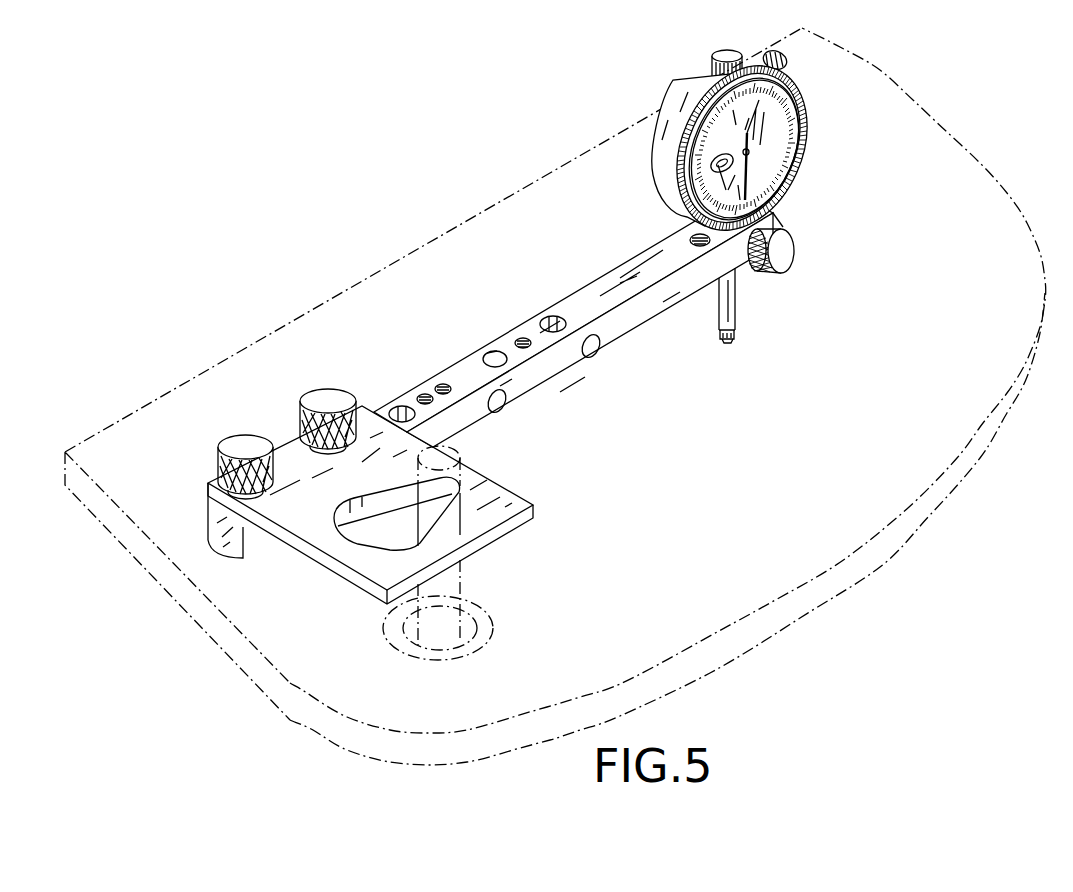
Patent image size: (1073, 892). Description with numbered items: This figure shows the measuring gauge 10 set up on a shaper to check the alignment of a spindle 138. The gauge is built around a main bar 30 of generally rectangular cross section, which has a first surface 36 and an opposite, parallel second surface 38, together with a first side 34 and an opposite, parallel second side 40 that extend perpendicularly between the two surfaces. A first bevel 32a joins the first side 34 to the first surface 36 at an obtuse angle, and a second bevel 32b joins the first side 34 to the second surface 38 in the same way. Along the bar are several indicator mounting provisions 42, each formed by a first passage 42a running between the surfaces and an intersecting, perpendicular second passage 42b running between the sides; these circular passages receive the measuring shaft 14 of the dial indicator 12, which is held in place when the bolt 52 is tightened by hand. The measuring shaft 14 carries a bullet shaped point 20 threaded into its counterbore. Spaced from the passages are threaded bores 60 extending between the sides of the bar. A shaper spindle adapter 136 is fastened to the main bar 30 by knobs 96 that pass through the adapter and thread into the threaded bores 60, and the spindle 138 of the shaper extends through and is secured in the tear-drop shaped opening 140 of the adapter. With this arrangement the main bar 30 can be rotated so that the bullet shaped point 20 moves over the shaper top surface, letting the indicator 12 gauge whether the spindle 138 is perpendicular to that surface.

The measuring gauge 10 is at (450, 268).
The indicator 12 is at (665, 118).
The measuring shaft 14 is at (737, 302).
The bullet shaped point 20 is at (729, 339).
The main bar 30 is at (635, 335).
The first bevel 32a is at (242, 563).
The second bevel 32b is at (210, 542).
The first side 34 is at (222, 555).
The first surface 36 is at (540, 375).
The second surface 38 is at (208, 512).
The second side 40 is at (604, 294).
The indicator mounting provision 42 is at (801, 222).
The first passage 42a is at (593, 353).
The second passage 42b is at (402, 406).
The bolt 52 is at (793, 245).
The threaded bore 60 is at (518, 338).
The knob 96 is at (323, 390).
The shaper spindle adapter 136 is at (522, 522).
The spindle 138 is at (452, 583).
The opening 140 is at (347, 550).